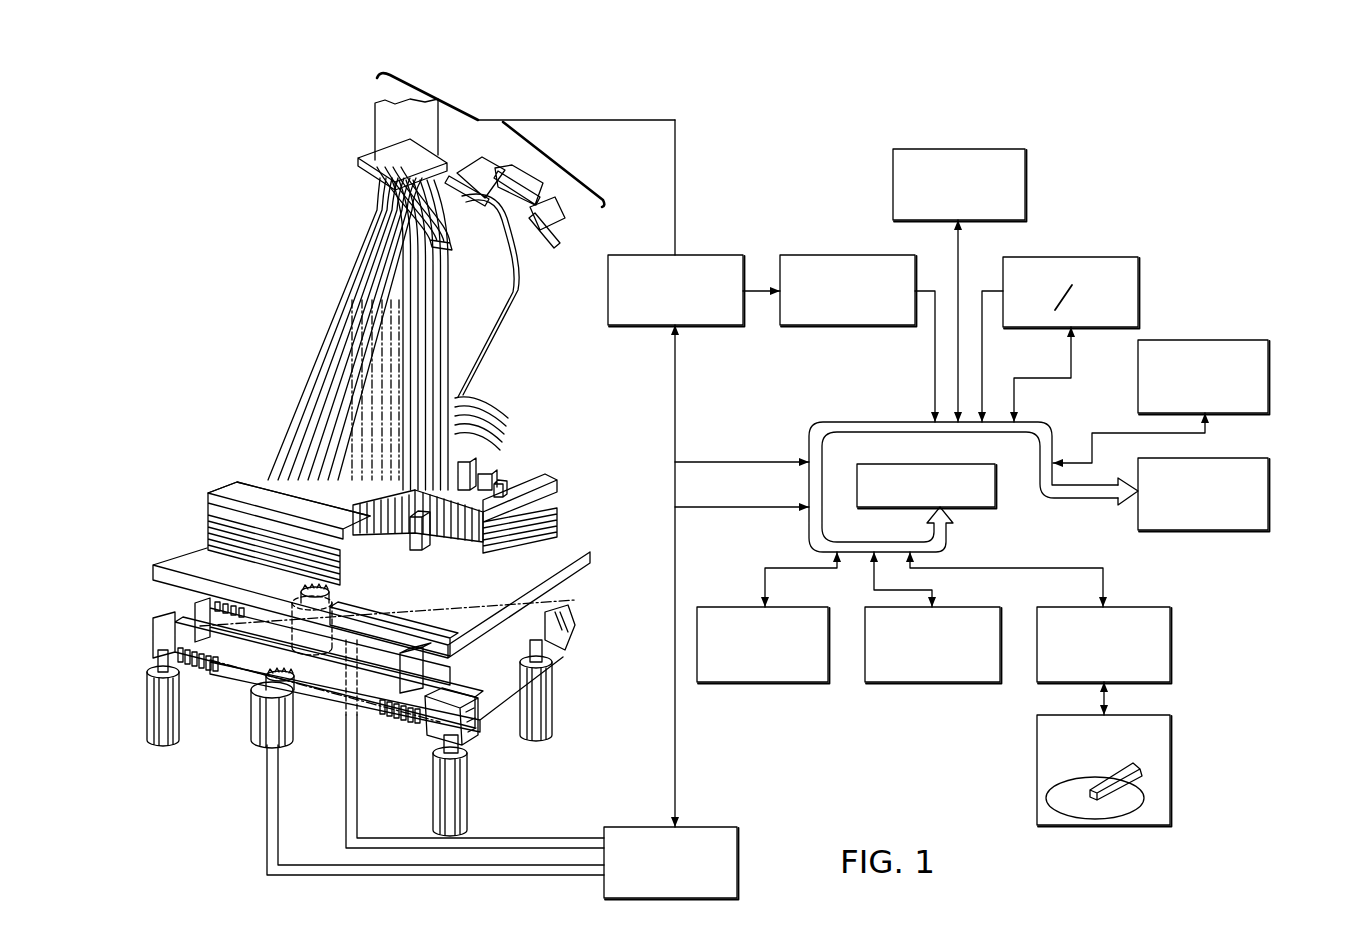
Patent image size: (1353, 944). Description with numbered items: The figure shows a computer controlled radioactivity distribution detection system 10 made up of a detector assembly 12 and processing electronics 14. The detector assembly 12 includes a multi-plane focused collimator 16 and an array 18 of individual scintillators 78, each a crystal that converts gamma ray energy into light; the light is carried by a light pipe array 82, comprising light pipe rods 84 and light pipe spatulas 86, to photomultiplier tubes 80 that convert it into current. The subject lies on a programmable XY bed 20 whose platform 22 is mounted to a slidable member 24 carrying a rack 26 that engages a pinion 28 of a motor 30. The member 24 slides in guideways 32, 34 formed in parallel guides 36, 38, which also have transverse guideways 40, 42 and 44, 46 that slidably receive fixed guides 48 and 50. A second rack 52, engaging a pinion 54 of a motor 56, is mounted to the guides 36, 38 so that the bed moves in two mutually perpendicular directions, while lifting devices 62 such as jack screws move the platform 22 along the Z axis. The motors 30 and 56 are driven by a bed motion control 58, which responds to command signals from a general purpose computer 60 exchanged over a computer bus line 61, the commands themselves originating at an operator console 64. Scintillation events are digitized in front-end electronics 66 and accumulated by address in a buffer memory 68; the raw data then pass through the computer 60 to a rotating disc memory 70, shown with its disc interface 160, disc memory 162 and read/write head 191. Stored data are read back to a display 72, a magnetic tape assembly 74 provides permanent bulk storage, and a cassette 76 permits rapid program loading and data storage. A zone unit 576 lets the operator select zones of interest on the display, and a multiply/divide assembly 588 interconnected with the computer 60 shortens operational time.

The radioactivity distribution detection system 10 is at (1248, 257).
The detector assembly 12 is at (275, 345).
The processing electronics 14 is at (762, 207).
The collimator 16 is at (414, 521).
The array of scintillators 18 is at (542, 502).
The programmable XY bed 20 is at (622, 602).
The platform 22 is at (180, 552).
The slidable member 24 is at (397, 648).
The rack 26 is at (243, 597).
The pinion 28 is at (332, 592).
The motor 30 is at (350, 620).
The guideway 32 is at (420, 682).
The guideway 34 is at (155, 632).
The guide 36 is at (480, 653).
The guide 38 is at (195, 602).
The transverse guideway 40 is at (565, 640).
The transverse guideway 42 is at (422, 722).
The transverse guideway 44 is at (380, 560).
The transverse guideway 46 is at (207, 670).
The fixed guide 48 is at (575, 625).
The fixed guide 50 is at (478, 735).
The rack 52 is at (375, 707).
The pinion 54 is at (302, 690).
The motor 56 is at (270, 740).
The bed motion control 58 is at (716, 827).
The general purpose computer 60 is at (985, 507).
The computer bus line 61 is at (840, 422).
The lifting devices 62 is at (179, 727).
The operator console 64 is at (915, 682).
The front-end electronics 66 is at (715, 255).
The buffer memory 68 is at (828, 255).
The rotating disc memory 70 is at (1136, 768).
The display 72 is at (1025, 190).
The magnetic tape assembly 74 is at (1268, 372).
The cassette 76 is at (1268, 520).
The scintillator 78 is at (545, 516).
The photomultiplier tubes 80 is at (555, 227).
The light pipe array 82 is at (335, 300).
The light pipe rods 84 is at (392, 207).
The light pipe spatulas 86 is at (488, 317).
The disc interface 160 is at (1170, 668).
The disc memory 162 is at (1145, 800).
The read/write head 191 is at (1140, 775).
The zone unit 576 is at (790, 682).
The multiply/divide assembly 588 is at (1138, 265).